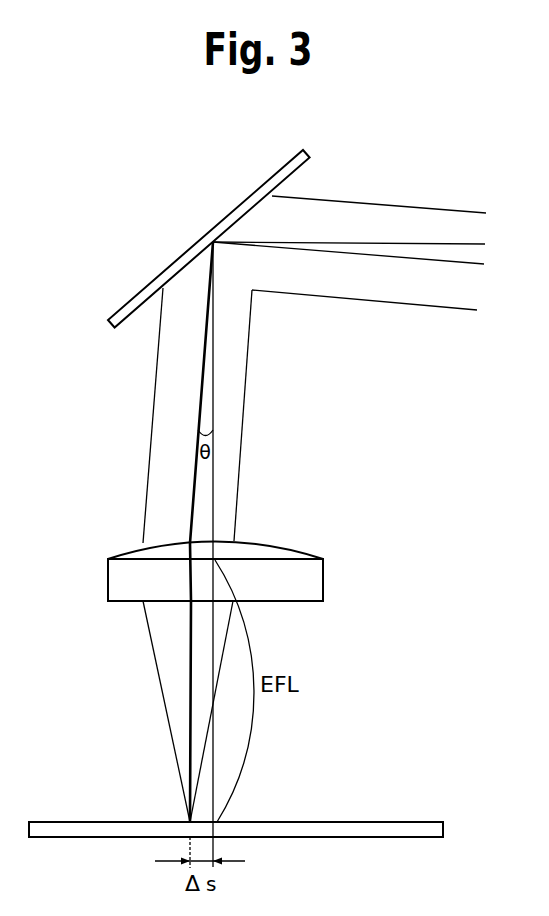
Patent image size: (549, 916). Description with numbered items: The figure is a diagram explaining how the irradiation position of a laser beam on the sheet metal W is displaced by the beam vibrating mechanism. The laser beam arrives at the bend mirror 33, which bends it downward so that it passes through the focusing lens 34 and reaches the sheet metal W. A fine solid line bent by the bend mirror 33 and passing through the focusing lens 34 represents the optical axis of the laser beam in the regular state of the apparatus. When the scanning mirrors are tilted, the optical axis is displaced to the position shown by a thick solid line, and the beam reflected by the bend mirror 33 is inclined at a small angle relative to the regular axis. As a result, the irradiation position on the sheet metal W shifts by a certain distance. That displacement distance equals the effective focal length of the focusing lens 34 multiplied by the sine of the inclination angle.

The bend mirror 33 is at (288, 148).
The focusing lens 34 is at (322, 556).
The sheet metal W is at (385, 822).